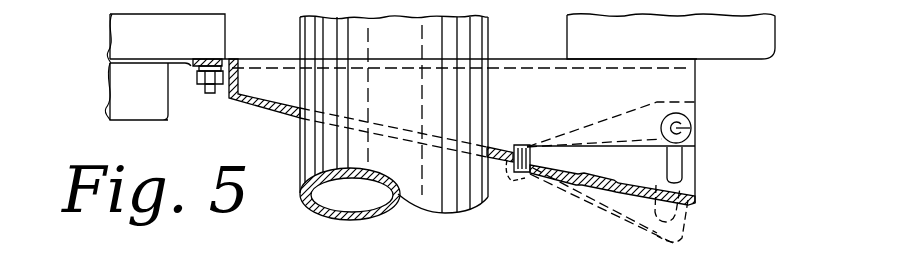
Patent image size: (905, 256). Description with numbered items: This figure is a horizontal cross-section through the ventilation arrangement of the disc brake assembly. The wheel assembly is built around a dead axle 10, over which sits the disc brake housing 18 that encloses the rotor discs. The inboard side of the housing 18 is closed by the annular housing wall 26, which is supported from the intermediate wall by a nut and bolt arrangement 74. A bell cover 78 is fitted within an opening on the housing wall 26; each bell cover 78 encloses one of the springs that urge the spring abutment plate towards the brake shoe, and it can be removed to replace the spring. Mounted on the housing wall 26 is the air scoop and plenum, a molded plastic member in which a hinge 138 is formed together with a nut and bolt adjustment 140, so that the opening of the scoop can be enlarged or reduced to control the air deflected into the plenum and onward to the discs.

The axle 10 is at (300, 198).
The disc brake housing 18 is at (787, 250).
The annular housing wall 26 is at (743, 48).
The nut and bolt arrangement 74 is at (207, 91).
The bell cover 78 is at (118, 122).
The hinge 138 is at (511, 176).
The nut and bolt adjustment 140 is at (690, 128).